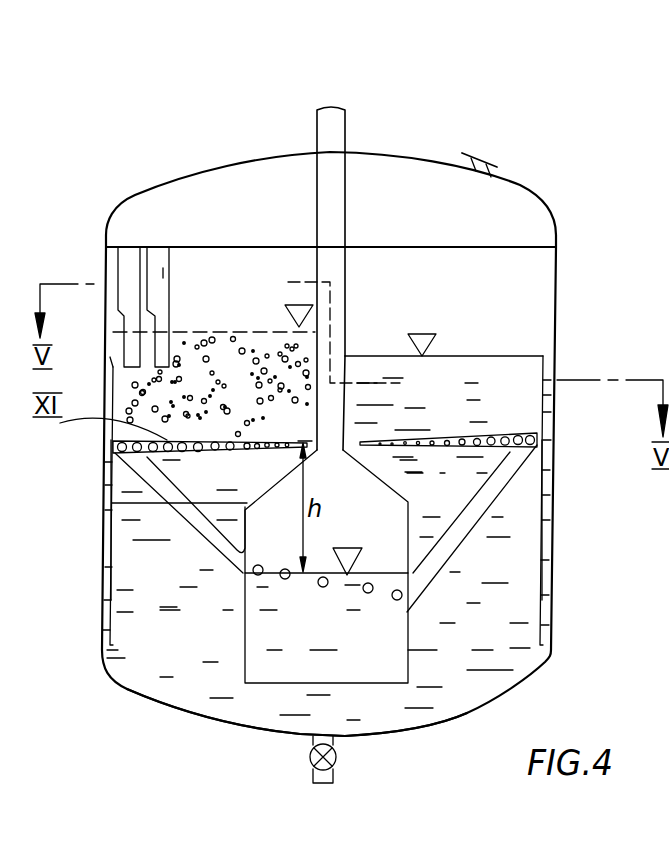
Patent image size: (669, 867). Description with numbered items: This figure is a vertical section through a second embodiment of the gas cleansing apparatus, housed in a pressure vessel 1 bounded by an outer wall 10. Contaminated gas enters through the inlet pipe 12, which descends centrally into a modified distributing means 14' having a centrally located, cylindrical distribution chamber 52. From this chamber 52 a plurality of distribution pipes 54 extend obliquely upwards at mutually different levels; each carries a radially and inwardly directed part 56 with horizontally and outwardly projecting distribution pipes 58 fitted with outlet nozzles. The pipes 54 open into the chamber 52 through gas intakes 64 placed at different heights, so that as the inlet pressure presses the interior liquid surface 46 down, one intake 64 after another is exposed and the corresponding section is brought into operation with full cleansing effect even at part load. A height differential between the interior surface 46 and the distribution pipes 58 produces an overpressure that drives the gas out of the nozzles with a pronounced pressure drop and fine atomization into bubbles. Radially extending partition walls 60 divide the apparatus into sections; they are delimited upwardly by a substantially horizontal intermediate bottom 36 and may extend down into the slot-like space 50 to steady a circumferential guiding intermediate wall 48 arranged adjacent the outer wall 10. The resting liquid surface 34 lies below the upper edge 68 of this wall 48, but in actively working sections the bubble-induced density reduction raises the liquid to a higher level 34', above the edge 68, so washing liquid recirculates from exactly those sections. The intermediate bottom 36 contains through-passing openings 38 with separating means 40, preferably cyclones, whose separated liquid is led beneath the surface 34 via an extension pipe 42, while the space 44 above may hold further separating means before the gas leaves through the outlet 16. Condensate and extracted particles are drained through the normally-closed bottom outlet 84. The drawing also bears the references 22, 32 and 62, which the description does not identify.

The pressure vessel 1 is at (150, 165).
The outer wall 10 is at (557, 250).
The inlet pipe 12 is at (350, 133).
The modified distributing means 14' is at (527, 656).
The outlet 16 is at (485, 160).
The bottom gas chamber 22 is at (293, 687).
The liquid 32 is at (210, 638).
The surface of the liquid 34 is at (444, 322).
The higher liquid level 34' is at (283, 310).
The intermediate bottom 36 is at (250, 243).
The through-passing openings 38 is at (158, 250).
The separating means 40 is at (163, 273).
The extension pipe 42 is at (180, 332).
The space 44 is at (284, 199).
The interior liquid surface 46 is at (387, 572).
The circumferential guiding intermediate wall 48 is at (110, 509).
The slot-like space 50 is at (108, 570).
The cylindrical distribution chamber 52 is at (243, 670).
The distribution pipes 54 is at (208, 532).
The radially inwardly directed parts 56 is at (258, 462).
The horizontally projecting distribution pipes 58 is at (218, 480).
The partition walls 60 is at (518, 285).
The bottom dome 62 is at (125, 690).
The gas intakes 64 is at (250, 562).
The upper edge 68 is at (113, 360).
The bottom outlet 84 is at (312, 772).